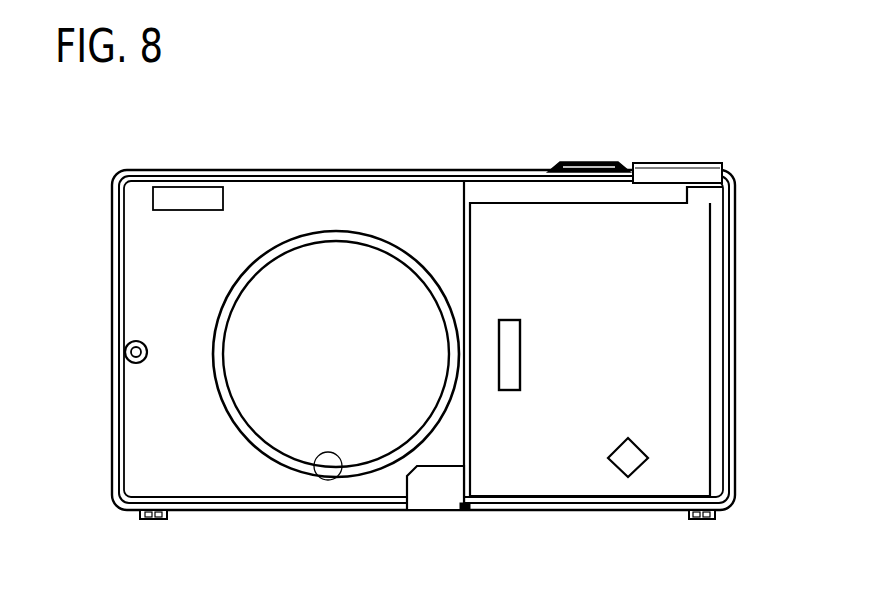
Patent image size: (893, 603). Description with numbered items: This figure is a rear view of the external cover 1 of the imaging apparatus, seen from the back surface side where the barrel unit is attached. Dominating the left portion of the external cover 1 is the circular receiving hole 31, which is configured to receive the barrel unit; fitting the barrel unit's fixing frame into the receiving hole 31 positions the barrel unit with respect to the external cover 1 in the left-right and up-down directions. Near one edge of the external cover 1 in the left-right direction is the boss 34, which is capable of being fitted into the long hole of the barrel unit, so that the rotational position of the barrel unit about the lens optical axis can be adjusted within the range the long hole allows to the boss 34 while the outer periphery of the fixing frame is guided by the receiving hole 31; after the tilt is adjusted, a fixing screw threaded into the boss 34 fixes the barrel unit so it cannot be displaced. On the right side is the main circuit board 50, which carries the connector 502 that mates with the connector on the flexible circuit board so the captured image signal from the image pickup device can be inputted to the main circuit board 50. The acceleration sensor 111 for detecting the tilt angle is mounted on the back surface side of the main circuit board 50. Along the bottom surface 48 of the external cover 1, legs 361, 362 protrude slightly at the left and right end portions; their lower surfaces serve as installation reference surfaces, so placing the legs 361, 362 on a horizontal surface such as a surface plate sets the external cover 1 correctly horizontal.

The external cover 1 is at (403, 170).
The receiving hole 31 is at (319, 478).
The boss 34 is at (125, 351).
The bottom surface 48 is at (372, 511).
The main circuit board 50 is at (703, 350).
The connector 502 is at (514, 357).
The acceleration sensor 111 is at (630, 477).
The leg 361 is at (152, 519).
The leg 362 is at (700, 519).